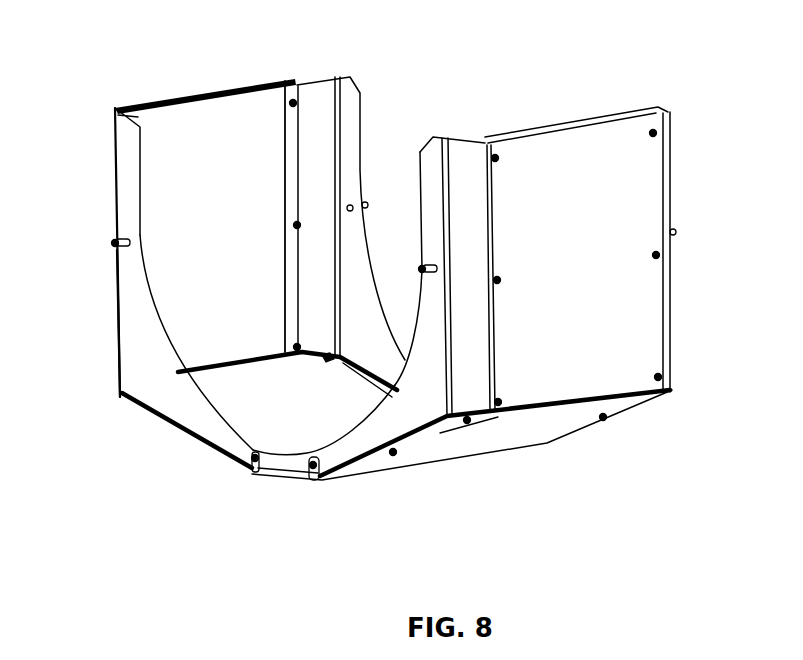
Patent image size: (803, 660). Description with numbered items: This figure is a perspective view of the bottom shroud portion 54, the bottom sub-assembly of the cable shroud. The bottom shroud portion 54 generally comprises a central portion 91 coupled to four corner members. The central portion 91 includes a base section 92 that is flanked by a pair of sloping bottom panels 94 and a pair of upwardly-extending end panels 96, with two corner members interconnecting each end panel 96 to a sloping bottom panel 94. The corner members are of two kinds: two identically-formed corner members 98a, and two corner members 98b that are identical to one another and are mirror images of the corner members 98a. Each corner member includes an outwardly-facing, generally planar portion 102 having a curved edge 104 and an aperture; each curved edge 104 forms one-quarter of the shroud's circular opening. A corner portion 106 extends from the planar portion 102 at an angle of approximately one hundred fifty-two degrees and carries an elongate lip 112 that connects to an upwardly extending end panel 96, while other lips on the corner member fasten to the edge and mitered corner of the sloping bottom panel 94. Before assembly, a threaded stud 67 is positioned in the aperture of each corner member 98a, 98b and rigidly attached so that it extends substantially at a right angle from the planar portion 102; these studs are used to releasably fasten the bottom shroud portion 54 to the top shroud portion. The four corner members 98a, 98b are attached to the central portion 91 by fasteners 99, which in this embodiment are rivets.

The bottom shroud portion 54 is at (430, 55).
The end panel 96 is at (180, 118).
The corner member 98a is at (313, 95).
The corner member 98b is at (668, 117).
The corner portion 106 is at (472, 160).
The elongate lip 112 is at (290, 135).
The curved edge 104 is at (422, 232).
The central portion 91 is at (643, 222).
The threaded stud 67 is at (420, 268).
The sloping bottom panel 94 is at (213, 397).
The planar portion 102 is at (137, 378).
The base section 92 is at (263, 480).
The fastener 99 is at (663, 133).